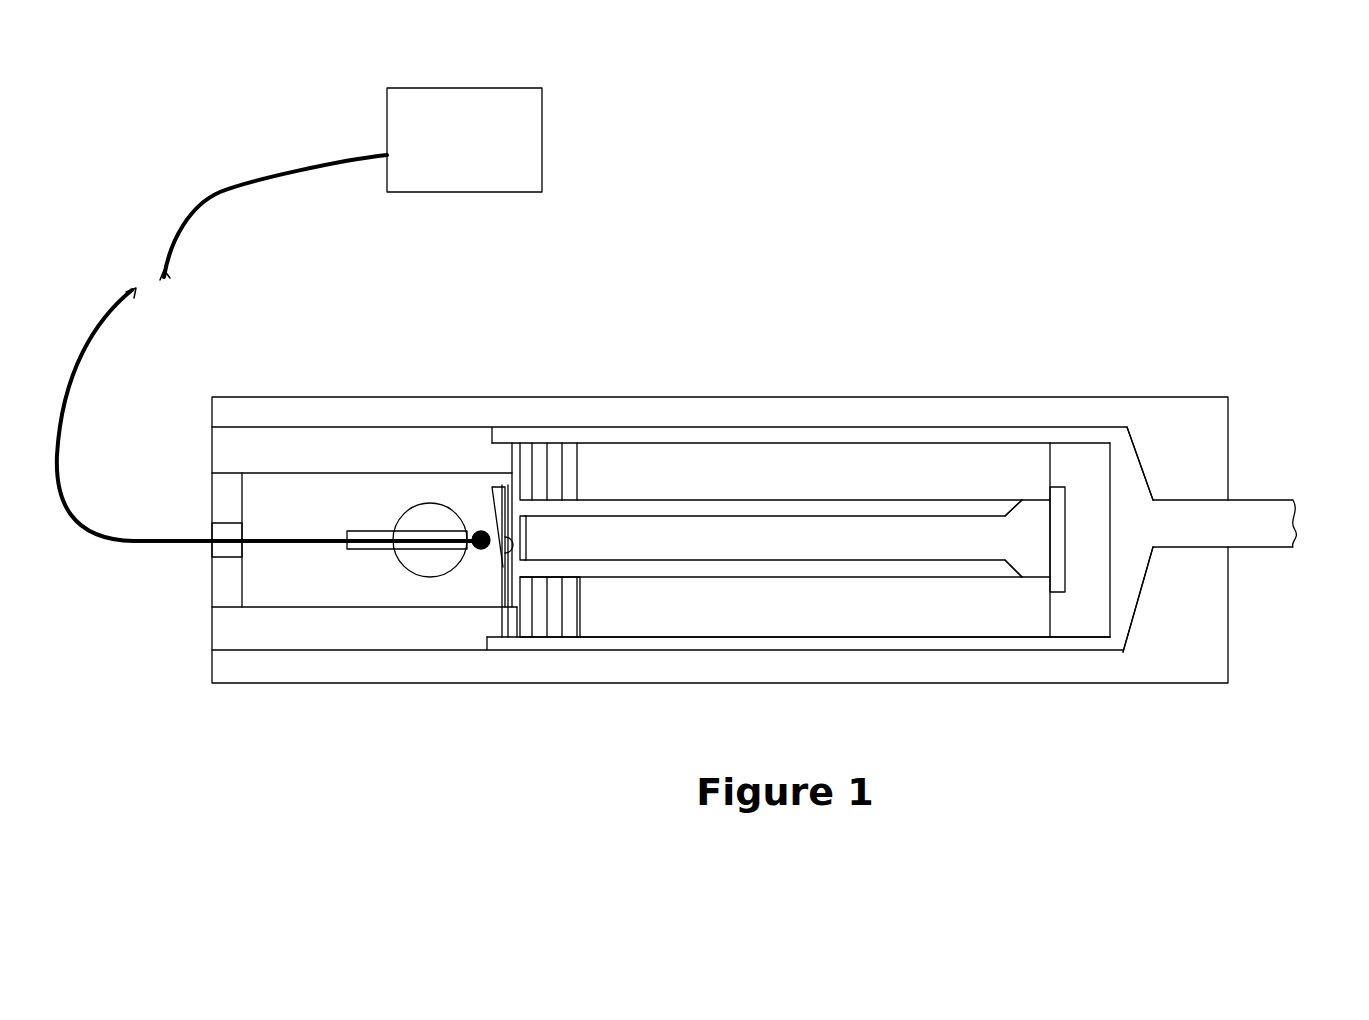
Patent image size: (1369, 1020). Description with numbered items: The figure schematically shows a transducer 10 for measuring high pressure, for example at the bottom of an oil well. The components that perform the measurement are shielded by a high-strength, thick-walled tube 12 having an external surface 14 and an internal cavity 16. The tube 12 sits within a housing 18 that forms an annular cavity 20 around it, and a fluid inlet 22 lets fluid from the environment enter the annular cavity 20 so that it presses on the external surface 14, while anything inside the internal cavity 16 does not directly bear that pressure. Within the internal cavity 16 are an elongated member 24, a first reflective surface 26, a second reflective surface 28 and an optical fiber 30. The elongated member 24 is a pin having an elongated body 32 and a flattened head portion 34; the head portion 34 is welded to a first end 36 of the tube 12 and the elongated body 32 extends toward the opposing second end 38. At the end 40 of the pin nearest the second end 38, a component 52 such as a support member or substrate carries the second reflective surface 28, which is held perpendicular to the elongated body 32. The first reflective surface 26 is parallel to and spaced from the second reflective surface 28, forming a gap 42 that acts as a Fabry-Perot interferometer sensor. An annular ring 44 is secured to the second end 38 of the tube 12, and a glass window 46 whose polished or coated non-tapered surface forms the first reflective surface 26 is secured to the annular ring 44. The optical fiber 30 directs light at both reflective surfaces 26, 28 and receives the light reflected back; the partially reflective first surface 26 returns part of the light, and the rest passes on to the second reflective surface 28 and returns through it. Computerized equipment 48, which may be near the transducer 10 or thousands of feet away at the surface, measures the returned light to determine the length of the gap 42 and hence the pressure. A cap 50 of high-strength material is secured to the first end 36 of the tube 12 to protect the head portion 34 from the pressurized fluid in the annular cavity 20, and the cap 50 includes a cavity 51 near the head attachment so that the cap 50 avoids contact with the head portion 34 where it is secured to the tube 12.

The transducer 10 is at (778, 268).
The tube 12 is at (705, 463).
The external surface 14 is at (767, 440).
The internal cavity 16 is at (808, 513).
The housing 18 is at (943, 413).
The annular cavity 20 is at (1012, 430).
The fluid inlet 22 is at (1255, 528).
The elongated member 24 is at (958, 543).
The first reflective surface 26 is at (500, 573).
The second reflective surface 28 is at (518, 535).
The optical fiber 30 is at (413, 543).
The elongated body 32 is at (752, 537).
The head portion 34 is at (1035, 542).
The first end 36 is at (1045, 625).
The second end 38 is at (517, 627).
The end of the pin 40 is at (525, 515).
The gap 42 is at (508, 548).
The annular ring 44 is at (522, 593).
The glass window 46 is at (499, 503).
The computerized equipment 48 is at (299, 314).
The cap 50 is at (1095, 477).
The cavity 51 is at (1058, 513).
The component 52 is at (502, 683).